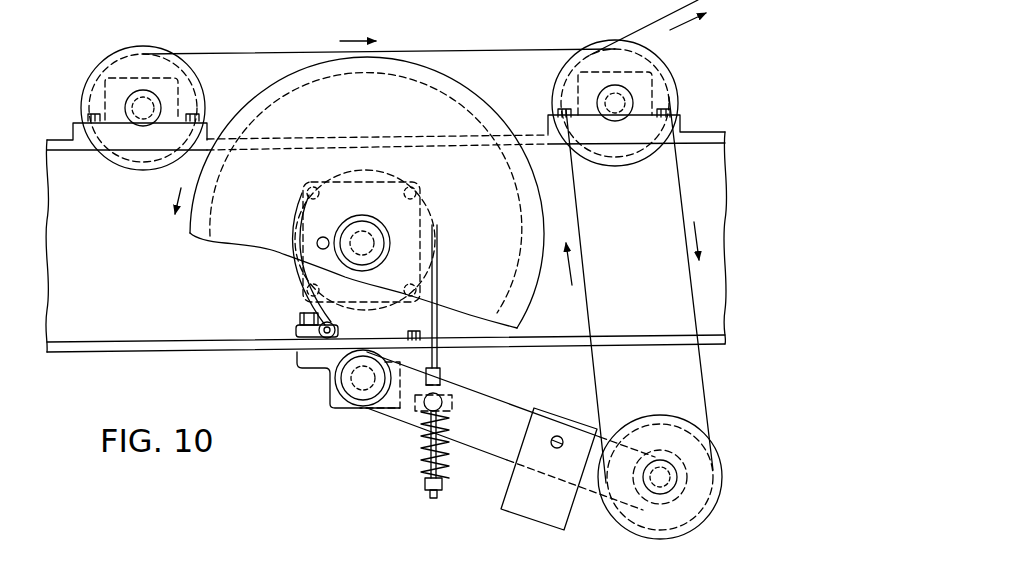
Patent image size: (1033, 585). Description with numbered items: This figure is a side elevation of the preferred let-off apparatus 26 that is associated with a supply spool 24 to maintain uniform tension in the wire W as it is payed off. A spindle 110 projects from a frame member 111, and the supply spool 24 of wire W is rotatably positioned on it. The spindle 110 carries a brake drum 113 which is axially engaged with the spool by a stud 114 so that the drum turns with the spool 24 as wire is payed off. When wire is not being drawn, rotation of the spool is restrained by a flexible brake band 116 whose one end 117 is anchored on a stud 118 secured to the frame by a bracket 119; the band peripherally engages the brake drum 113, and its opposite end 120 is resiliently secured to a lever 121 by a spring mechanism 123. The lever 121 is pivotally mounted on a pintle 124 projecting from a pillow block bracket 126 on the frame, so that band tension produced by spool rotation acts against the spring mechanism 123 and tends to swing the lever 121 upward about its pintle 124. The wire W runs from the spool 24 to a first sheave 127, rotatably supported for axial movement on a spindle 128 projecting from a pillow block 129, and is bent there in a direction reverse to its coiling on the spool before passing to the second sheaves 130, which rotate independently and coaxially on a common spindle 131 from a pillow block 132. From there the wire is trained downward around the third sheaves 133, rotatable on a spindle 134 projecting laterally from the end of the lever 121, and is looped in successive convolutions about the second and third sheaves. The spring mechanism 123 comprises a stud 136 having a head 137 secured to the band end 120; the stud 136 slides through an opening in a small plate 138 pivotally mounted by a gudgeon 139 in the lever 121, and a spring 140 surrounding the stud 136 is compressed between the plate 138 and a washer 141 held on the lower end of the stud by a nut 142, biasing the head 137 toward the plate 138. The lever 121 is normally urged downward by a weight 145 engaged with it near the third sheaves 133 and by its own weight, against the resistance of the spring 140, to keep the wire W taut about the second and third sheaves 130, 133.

The supply spool 24 is at (424, 88).
The saw assembly frame 26 is at (230, 371).
The spindle 110 is at (360, 243).
The frame member 111 is at (126, 284).
The brake drum 113 is at (352, 308).
The stud 114 is at (321, 238).
The flexible brake band 116 is at (348, 172).
The end of brake band 117 is at (300, 288).
The stud 118 is at (300, 331).
The bracket 119 is at (302, 318).
The opposite end of brake band 120 is at (438, 337).
The lever 121 is at (510, 410).
The spring mechanism 123 is at (412, 478).
The pintle 124 is at (353, 382).
The pillow block bracket 126 is at (337, 406).
The first sheave 127 is at (95, 72).
The spindle 128 is at (152, 100).
The pillow block 129 is at (138, 78).
The second sheaves 130 is at (597, 37).
The common spindle 131 is at (603, 98).
The pillow block 132 is at (652, 86).
The third sheaves 133 is at (684, 544).
The spindle 134 is at (670, 482).
The stud 136 is at (447, 384).
The head 137 is at (437, 370).
The small plate 138 is at (418, 407).
The gudgeon 139 is at (445, 407).
The spring 140 is at (420, 448).
The washer 141 is at (477, 497).
The nut 142 is at (425, 494).
The weight 145 is at (545, 515).
The wire W is at (482, 50).